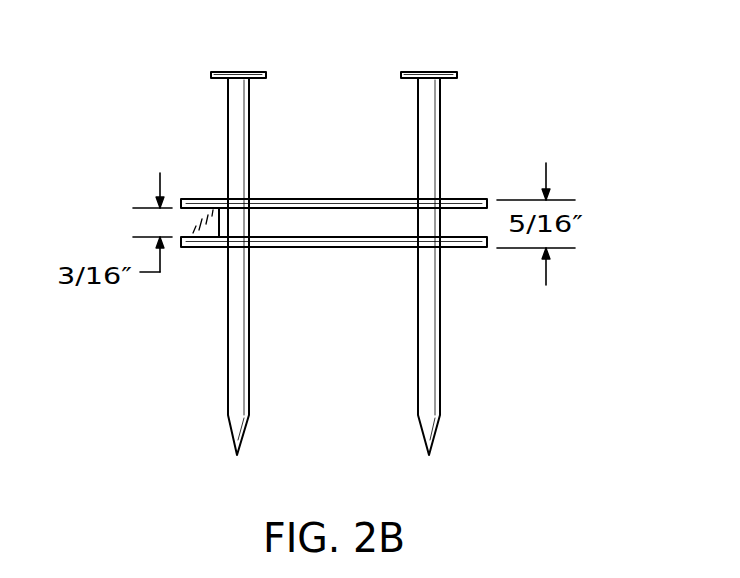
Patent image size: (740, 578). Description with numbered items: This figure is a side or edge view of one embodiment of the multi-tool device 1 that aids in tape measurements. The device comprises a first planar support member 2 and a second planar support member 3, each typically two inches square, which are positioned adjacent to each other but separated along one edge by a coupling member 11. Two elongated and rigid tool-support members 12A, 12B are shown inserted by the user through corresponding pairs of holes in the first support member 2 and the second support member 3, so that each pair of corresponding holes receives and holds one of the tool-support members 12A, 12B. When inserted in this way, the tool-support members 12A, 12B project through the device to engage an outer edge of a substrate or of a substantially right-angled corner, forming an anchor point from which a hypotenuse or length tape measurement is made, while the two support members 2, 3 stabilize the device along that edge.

The fastener assembly 1 is at (318, 263).
The first planar support member 2 is at (478, 200).
The second planar support member 3 is at (194, 248).
The coupling member 11 is at (189, 222).
The elongated and rigid tool-support member 12A is at (237, 331).
The elongated and rigid tool-support member 12B is at (428, 331).